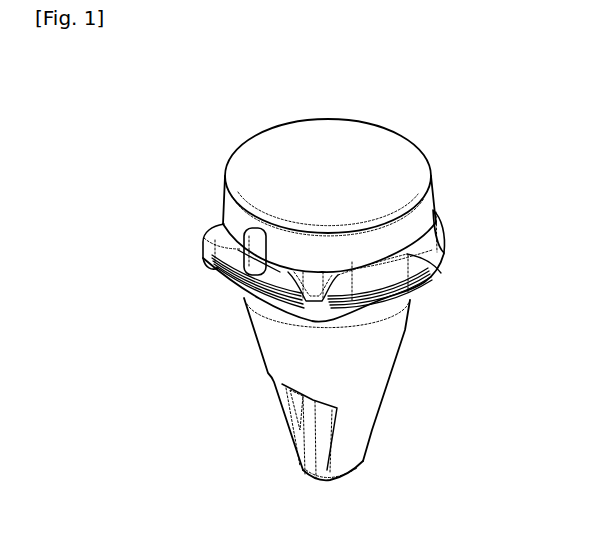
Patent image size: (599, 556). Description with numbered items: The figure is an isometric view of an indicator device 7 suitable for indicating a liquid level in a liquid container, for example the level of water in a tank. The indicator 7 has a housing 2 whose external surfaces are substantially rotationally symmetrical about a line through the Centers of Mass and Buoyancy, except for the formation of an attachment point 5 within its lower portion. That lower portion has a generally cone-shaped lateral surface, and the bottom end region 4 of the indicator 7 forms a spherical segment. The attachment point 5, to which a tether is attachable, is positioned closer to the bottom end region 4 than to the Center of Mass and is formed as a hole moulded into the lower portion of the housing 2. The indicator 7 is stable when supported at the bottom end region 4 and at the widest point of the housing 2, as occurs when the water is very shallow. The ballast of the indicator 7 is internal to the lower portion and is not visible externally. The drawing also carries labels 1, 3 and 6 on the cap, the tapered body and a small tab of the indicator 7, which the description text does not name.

The cap 1 is at (424, 152).
The housing 2 is at (449, 233).
The conical body 3 is at (398, 356).
The bottom end region 4 is at (353, 470).
The attachment point 5 is at (289, 445).
The locking tab 6 is at (215, 275).
The indicator device 7 is at (228, 118).